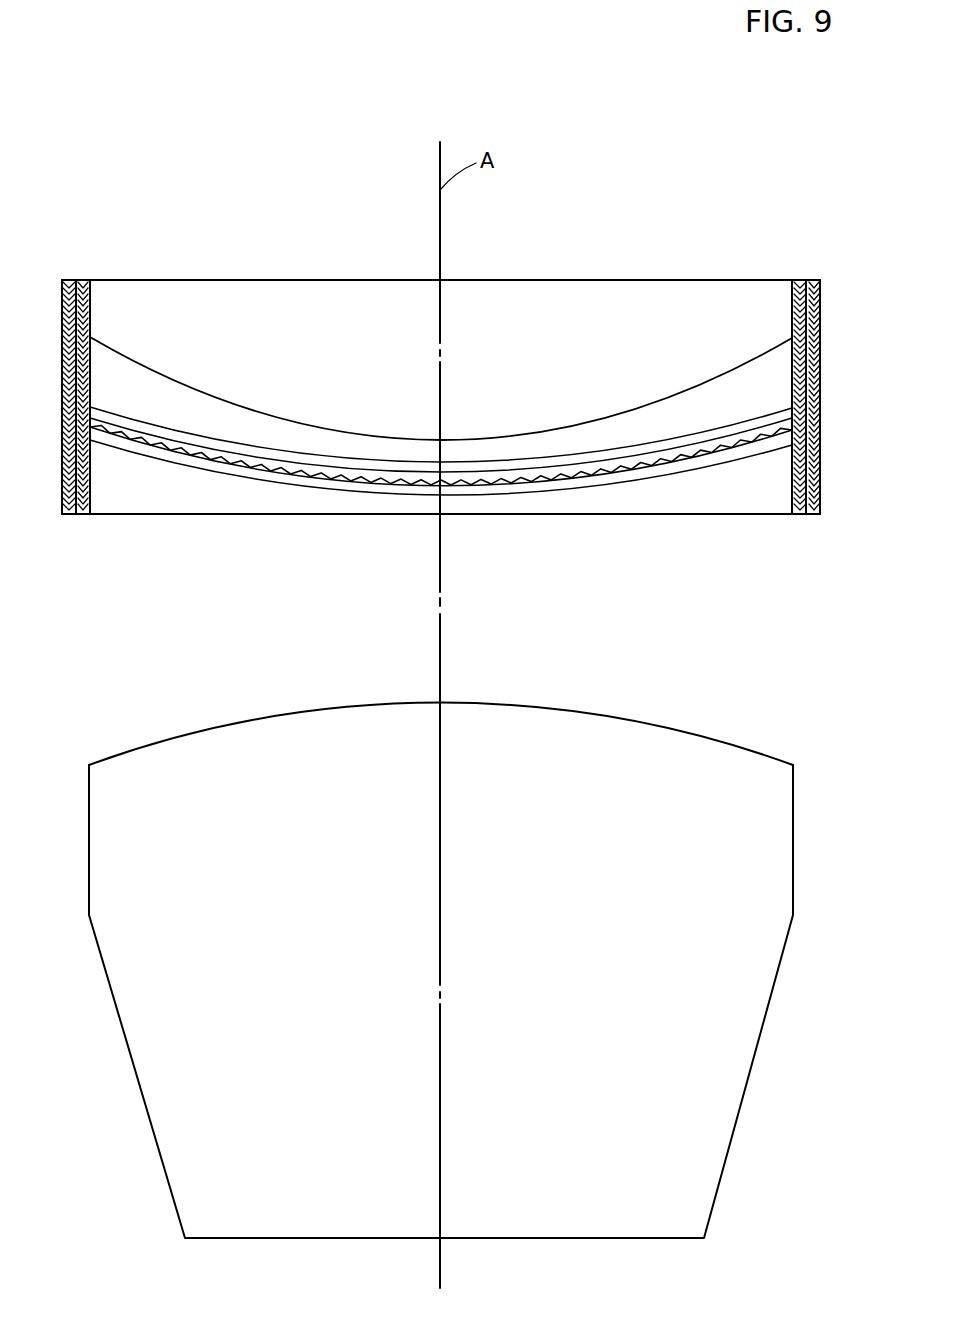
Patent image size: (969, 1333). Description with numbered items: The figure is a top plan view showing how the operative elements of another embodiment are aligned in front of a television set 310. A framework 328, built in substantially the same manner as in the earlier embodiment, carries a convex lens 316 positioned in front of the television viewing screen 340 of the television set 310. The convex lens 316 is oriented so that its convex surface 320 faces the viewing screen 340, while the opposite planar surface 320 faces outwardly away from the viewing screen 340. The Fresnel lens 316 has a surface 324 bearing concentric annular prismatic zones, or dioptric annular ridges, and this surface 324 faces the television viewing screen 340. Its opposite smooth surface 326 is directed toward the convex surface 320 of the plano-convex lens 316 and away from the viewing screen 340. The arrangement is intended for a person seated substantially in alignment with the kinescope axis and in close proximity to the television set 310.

The television set 310 is at (123, 1047).
The convex lens 316 is at (565, 278).
The convex surface 320 is at (208, 280).
The surface of the Fresnel lens 324 is at (503, 483).
The smooth surface 326 is at (175, 445).
The framework 328 is at (802, 521).
The television viewing screen 340 is at (198, 733).